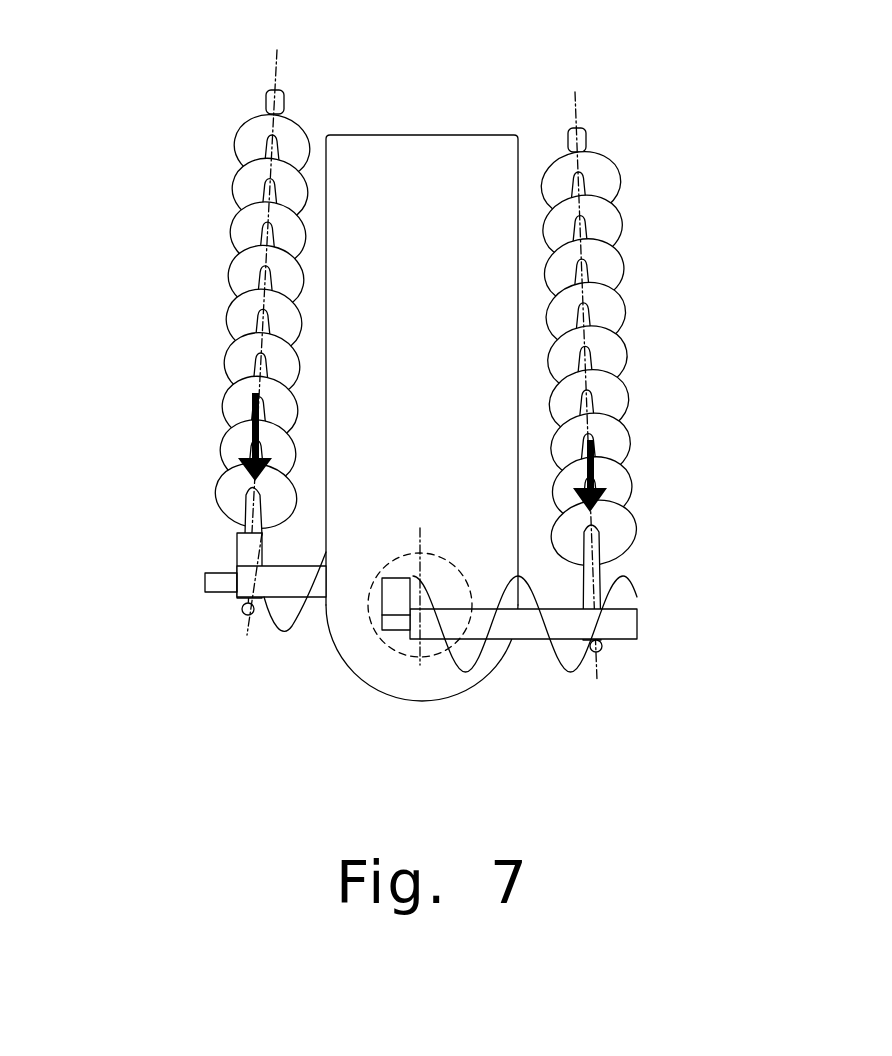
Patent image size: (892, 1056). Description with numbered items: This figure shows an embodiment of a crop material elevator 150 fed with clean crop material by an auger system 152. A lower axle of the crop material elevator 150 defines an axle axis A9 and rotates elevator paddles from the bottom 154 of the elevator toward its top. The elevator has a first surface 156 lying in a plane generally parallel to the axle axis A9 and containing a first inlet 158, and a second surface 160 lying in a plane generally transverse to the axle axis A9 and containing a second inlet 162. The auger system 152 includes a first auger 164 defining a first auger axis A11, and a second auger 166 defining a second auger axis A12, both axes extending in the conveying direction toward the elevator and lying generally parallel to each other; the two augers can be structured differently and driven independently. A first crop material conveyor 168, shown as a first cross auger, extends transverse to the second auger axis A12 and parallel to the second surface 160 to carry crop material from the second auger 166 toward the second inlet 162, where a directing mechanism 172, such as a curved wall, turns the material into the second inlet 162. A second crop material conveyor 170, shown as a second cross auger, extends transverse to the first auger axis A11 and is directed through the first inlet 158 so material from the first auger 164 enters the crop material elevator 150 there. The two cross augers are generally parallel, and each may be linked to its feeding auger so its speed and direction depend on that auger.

The crop material elevator 150 is at (411, 387).
The auger system 152 is at (439, 365).
The bottom 154 is at (380, 693).
The first surface 156 is at (326, 433).
The first inlet 158 is at (322, 582).
The second surface 160 is at (443, 453).
The second inlet 162 is at (380, 634).
The first auger 164 is at (227, 337).
The second auger 166 is at (642, 325).
The first crop material conveyor 168 is at (545, 645).
The second crop material conveyor 170 is at (268, 632).
The directing mechanism 172 is at (397, 577).
The axle axis A9 is at (418, 610).
The first auger axis A11 is at (303, 67).
The second auger axis A12 is at (603, 101).